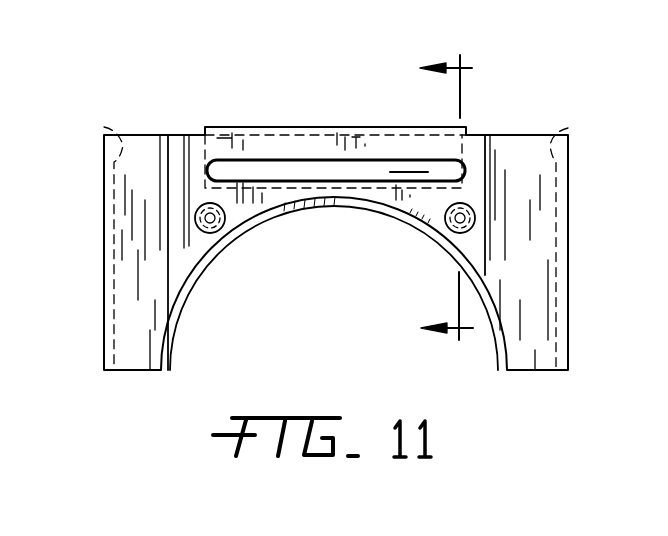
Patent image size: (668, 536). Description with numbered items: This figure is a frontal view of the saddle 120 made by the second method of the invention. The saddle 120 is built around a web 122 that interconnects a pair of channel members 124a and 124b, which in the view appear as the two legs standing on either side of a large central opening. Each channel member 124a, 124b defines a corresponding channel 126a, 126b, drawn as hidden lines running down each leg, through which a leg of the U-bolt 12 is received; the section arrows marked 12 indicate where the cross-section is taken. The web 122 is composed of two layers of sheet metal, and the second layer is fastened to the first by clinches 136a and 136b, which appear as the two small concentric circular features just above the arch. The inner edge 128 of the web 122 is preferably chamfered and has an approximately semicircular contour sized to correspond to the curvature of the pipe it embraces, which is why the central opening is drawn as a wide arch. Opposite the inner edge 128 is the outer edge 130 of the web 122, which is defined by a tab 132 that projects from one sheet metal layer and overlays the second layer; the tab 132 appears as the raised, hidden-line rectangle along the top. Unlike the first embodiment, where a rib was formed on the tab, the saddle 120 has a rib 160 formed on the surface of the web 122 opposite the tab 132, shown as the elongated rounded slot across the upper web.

The U-bolt 12 is at (431, 199).
The saddle 120 is at (176, 112).
The web 122 is at (405, 198).
The channel member 124a is at (130, 249).
The channel member 124b is at (537, 246).
The channel 126a is at (115, 137).
The channel 126b is at (554, 134).
The inner edge 128 is at (258, 220).
The outer edge 130 is at (262, 127).
The tab 132 is at (477, 131).
The clinch 136a is at (221, 225).
The clinch 136b is at (450, 229).
The rib 160 is at (302, 162).